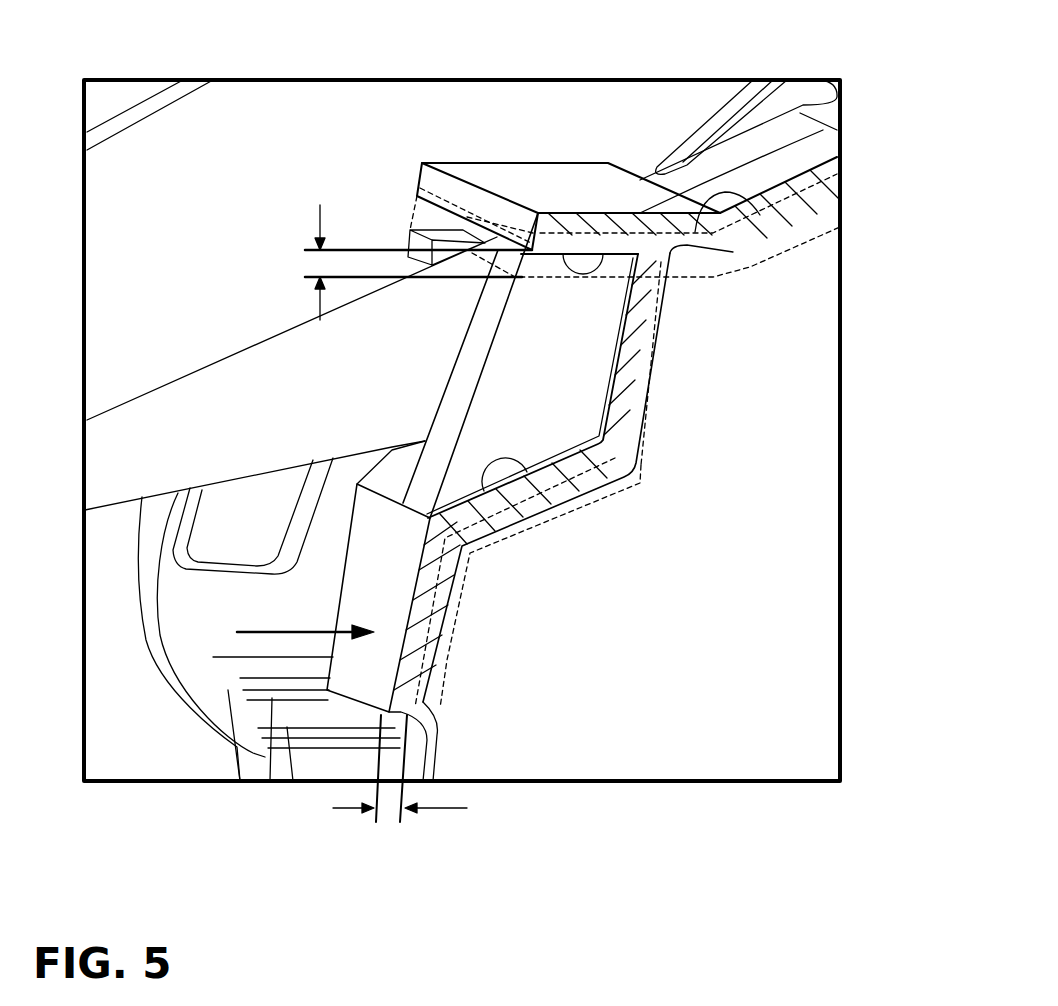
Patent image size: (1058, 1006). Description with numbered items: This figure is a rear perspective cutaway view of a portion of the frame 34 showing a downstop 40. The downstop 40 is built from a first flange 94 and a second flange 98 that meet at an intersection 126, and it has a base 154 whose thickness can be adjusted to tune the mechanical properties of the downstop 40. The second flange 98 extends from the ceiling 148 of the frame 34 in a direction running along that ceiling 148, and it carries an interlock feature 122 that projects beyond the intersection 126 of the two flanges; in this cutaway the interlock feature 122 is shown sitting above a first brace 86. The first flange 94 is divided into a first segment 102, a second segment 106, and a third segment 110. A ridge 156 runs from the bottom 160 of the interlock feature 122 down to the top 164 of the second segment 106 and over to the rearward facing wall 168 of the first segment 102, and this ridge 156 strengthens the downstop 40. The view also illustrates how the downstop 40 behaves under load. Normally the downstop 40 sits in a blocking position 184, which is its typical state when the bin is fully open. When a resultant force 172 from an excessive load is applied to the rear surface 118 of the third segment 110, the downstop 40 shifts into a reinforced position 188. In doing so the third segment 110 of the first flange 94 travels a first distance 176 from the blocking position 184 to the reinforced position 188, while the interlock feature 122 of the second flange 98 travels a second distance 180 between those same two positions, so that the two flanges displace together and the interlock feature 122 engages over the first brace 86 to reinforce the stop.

The frame 34 is at (593, 127).
The downstop 40 is at (636, 133).
The first brace 86 is at (408, 243).
The interlock feature 122 is at (590, 232).
The bottom of the interlock feature 160 is at (805, 108).
The ceiling 148 is at (758, 173).
The base 154 is at (745, 222).
The second flange 98 is at (748, 233).
The intersection 126 is at (648, 302).
The first flange 94 is at (672, 333).
The blocking position 184 is at (655, 362).
The first segment 102 is at (645, 398).
The reinforced position 188 is at (662, 484).
The rearward facing wall 168 is at (620, 332).
The ridge 156 is at (530, 372).
The resultant force 172 is at (285, 632).
The rear surface 118 is at (373, 670).
The first distance 176 is at (358, 810).
The third segment 110 is at (540, 507).
The top of the second segment 164 is at (558, 477).
The second segment 106 is at (553, 478).
The second distance 180 is at (318, 218).